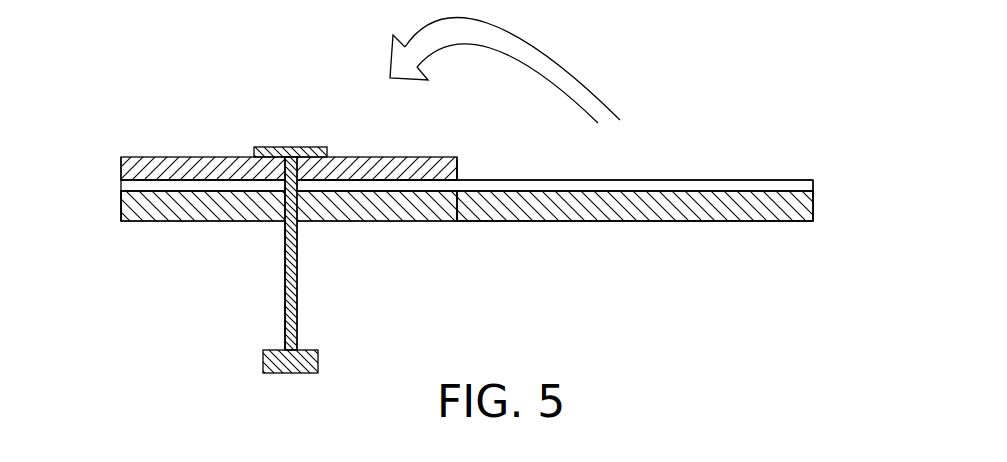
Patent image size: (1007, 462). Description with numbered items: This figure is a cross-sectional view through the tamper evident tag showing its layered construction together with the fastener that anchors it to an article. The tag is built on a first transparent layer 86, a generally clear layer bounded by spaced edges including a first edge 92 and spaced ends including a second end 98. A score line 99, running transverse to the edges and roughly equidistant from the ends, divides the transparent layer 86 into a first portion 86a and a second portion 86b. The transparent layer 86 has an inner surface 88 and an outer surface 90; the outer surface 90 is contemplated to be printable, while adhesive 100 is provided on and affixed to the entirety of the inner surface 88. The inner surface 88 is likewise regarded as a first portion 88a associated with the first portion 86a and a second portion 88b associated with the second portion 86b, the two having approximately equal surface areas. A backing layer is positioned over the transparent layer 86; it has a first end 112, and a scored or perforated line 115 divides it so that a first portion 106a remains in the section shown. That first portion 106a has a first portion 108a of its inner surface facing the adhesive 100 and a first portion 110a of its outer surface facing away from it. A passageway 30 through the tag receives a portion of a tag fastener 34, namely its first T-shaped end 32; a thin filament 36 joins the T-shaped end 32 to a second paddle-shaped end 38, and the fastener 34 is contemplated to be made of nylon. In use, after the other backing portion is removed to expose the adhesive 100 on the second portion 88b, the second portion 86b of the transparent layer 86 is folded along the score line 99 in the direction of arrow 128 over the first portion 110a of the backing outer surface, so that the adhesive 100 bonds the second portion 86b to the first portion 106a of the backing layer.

The passageway 30 is at (295, 253).
The first T-shaped end 32 is at (305, 147).
The tag fastener 34 is at (255, 323).
The thin filament 36 is at (297, 297).
The second paddle-shaped end 38 is at (318, 373).
The first transparent layer 86 is at (811, 236).
The first portion of transparent layer 86a is at (200, 208).
The second portion of transparent layer 86b is at (666, 204).
The inner surface 88 is at (700, 190).
The first portion of inner surface 88a is at (165, 183).
The second portion of inner surface 88b is at (590, 178).
The outer surface 90 is at (737, 222).
The first edge 92 is at (121, 206).
The second end 98 is at (815, 197).
The score line 99 is at (460, 204).
The adhesive 100 is at (826, 176).
The first portion of backing layer 106a is at (461, 152).
The first portion of inner surface of backing layer 108a is at (400, 186).
The first portion of outer surface of backing layer 110a is at (207, 157).
The first end of backing layer 112 is at (121, 166).
The perforated line 115 is at (458, 171).
The arrow 128 is at (557, 55).